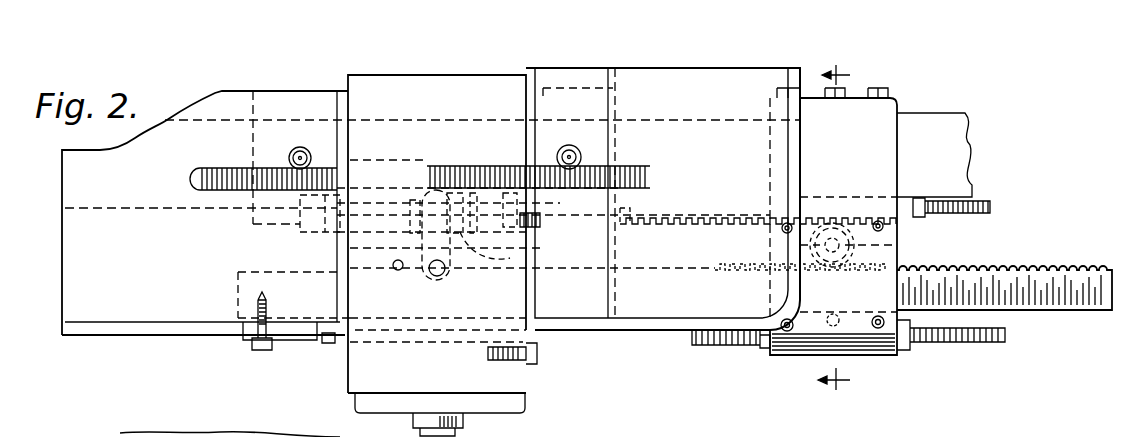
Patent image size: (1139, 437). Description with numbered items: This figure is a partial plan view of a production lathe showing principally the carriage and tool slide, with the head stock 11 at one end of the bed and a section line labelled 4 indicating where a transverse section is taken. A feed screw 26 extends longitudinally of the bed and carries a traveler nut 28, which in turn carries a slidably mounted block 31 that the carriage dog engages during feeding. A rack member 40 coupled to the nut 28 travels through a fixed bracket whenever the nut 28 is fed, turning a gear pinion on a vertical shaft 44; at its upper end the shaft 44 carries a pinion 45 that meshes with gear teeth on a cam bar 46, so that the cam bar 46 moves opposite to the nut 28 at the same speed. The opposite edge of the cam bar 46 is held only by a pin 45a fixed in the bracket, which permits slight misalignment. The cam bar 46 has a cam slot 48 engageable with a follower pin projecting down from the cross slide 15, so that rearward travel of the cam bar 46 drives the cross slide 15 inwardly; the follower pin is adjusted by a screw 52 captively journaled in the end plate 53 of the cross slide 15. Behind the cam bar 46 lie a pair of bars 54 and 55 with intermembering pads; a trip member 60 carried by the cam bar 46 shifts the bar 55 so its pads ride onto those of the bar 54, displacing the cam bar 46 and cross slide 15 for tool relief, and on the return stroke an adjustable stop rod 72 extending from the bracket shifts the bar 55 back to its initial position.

The section line 4- 4 is at (842, 230).
The head stock 11 is at (237, 436).
The cross slide 15 is at (512, 377).
The feed screw 26 is at (633, 160).
The traveler nut 28 is at (310, 226).
The slidably mounted block 31 is at (490, 252).
The rack member 40 is at (690, 222).
The shaft 44 is at (812, 248).
The pinion 45 is at (897, 245).
The pin 45a is at (838, 318).
The cam bar 46 is at (1016, 272).
The cam slot 48 is at (480, 270).
The screw 52 is at (467, 425).
The end plate 53 is at (515, 403).
The bar 54 is at (315, 325).
The bar 55 is at (330, 334).
The trip member 60 is at (300, 334).
The adjustable stop rod 72 is at (697, 330).